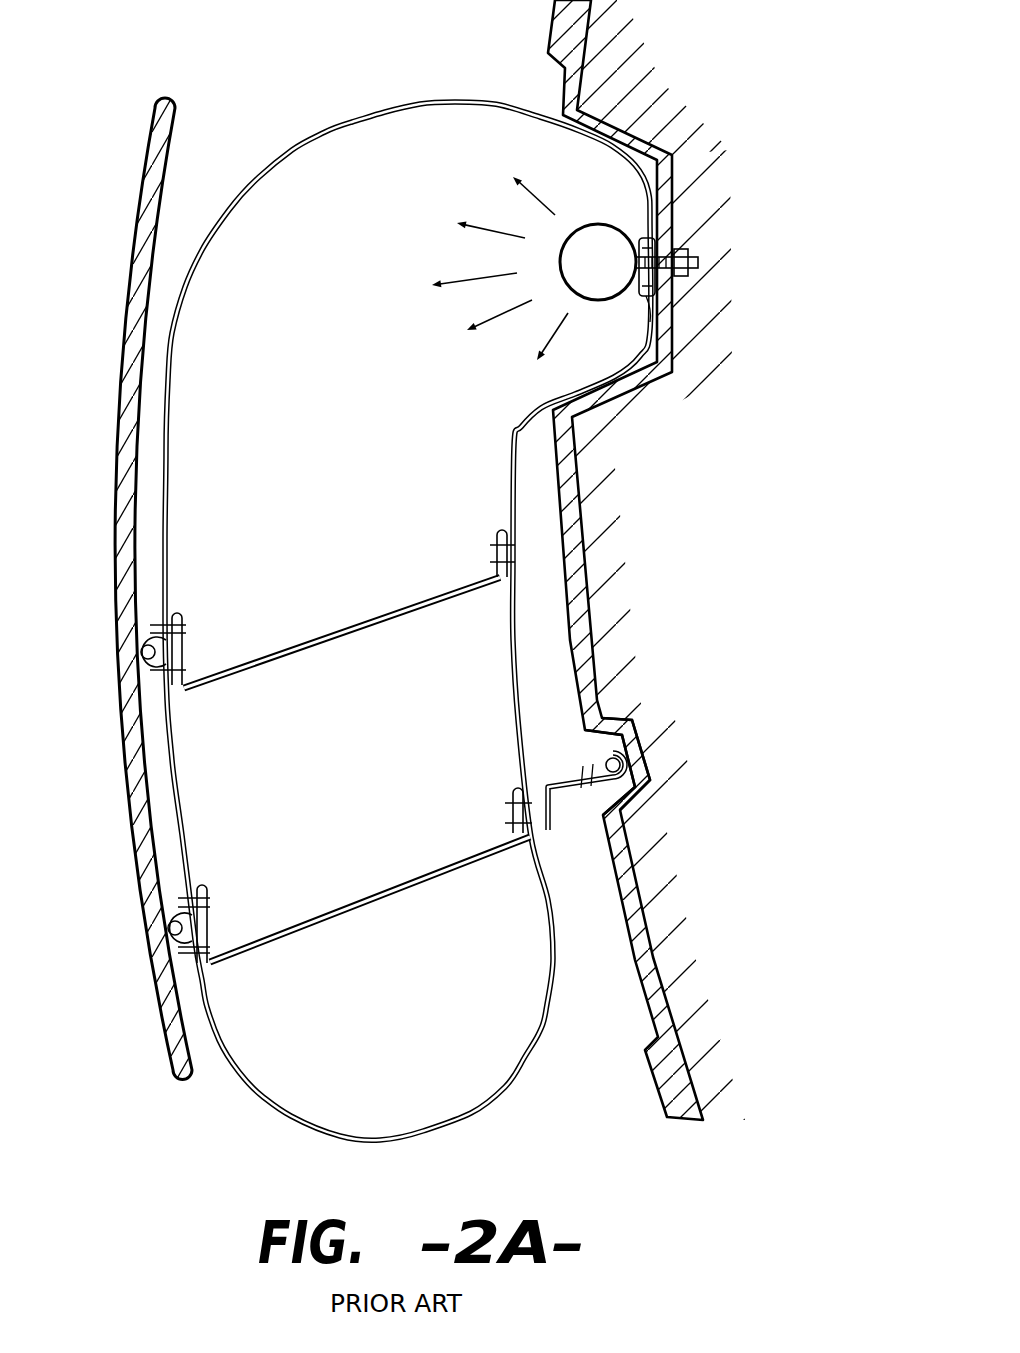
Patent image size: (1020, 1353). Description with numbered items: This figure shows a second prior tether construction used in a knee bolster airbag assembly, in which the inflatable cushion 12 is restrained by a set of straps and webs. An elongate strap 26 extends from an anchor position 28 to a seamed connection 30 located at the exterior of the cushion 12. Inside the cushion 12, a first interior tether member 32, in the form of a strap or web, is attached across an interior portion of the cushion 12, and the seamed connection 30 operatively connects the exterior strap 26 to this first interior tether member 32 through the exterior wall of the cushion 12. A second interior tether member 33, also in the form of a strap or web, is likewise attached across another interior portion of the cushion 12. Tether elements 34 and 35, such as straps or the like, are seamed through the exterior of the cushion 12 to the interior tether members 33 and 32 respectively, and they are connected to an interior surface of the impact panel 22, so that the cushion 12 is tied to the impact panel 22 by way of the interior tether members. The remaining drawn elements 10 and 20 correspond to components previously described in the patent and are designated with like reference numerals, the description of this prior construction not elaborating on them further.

The housing / mounting wall 10 is at (668, 140).
The cushion 12 is at (383, 110).
The light bulb 20 is at (620, 298).
The impact panel 22 is at (150, 957).
The elongate strap 26 is at (613, 748).
The anchor position 28 is at (567, 793).
The seamed connection 30 is at (553, 820).
The first interior tether member 32 is at (388, 878).
The second interior tether member 33 is at (383, 615).
The tether element 34 is at (140, 637).
The tether element 35 is at (168, 913).